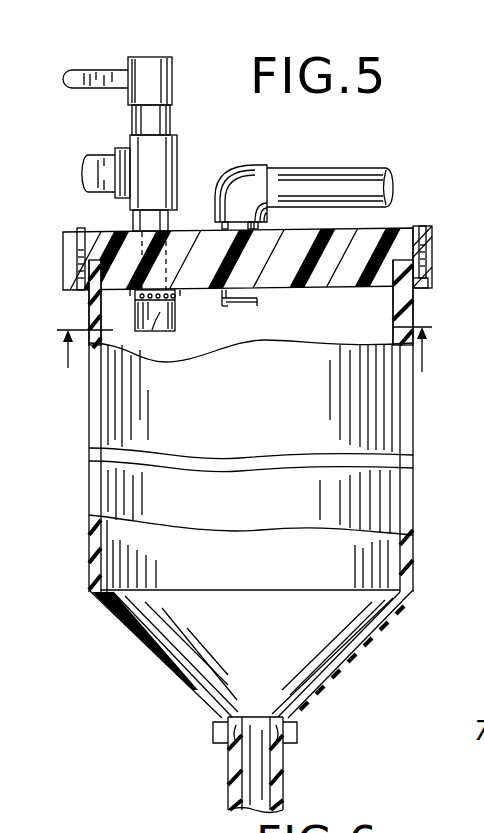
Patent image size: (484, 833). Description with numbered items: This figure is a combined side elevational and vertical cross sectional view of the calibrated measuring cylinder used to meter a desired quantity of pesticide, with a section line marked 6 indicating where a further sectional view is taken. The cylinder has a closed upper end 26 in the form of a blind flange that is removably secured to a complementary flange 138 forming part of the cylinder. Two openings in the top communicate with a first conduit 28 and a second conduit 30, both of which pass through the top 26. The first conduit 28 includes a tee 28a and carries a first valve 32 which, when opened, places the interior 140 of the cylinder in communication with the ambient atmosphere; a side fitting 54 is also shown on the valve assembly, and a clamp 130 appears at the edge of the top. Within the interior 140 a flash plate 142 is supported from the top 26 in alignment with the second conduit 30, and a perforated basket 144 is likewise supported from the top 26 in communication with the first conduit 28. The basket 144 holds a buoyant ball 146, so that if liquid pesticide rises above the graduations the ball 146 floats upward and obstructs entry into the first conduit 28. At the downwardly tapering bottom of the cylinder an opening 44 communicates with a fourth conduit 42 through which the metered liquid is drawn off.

The first valve 32 is at (174, 80).
The first conduit 28 is at (170, 119).
The tee 28a is at (170, 158).
The side port 54 is at (102, 155).
The second conduit 30 is at (350, 178).
The closed upper end 26 is at (383, 227).
The clamp 130 is at (416, 225).
The complementary flange 138 is at (428, 287).
The interior 140 is at (345, 333).
The flash plate 142 is at (245, 304).
The perforated basket 144 is at (176, 322).
The buoyant ball 146 is at (153, 315).
The opening 44 is at (293, 724).
The fourth conduit 42 is at (284, 770).
The section line 6- 6 is at (245, 370).